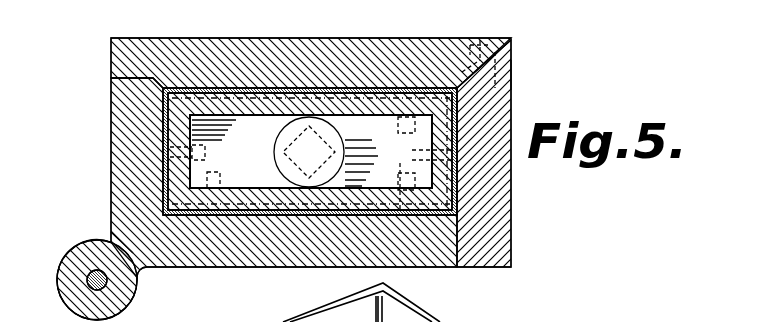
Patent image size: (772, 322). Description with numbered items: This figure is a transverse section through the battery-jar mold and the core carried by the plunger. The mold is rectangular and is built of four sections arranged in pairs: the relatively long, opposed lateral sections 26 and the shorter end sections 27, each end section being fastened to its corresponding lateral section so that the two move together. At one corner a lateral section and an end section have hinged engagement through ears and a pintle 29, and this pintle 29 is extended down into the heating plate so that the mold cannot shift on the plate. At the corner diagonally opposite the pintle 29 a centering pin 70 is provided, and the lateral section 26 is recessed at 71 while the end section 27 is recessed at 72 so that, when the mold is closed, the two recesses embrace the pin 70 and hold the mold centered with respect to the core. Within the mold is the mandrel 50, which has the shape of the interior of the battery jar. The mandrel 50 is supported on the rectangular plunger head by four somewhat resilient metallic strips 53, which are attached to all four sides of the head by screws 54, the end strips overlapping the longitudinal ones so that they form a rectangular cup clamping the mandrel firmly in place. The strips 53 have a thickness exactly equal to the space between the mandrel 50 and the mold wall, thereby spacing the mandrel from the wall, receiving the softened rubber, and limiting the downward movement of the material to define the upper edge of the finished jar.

The lateral section 26 is at (335, 42).
The end section 27 is at (118, 118).
The pintle 29 is at (90, 282).
The mandrel 50 is at (248, 178).
The metallic strips 53 is at (226, 88).
The screws 54 is at (203, 153).
The pin 70 is at (503, 37).
The recess 71 is at (449, 38).
The recess 72 is at (512, 78).